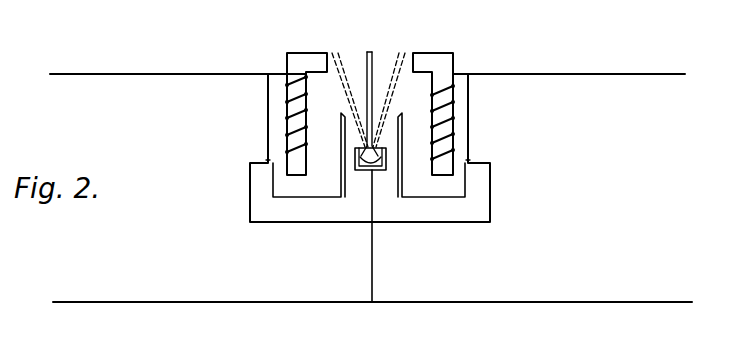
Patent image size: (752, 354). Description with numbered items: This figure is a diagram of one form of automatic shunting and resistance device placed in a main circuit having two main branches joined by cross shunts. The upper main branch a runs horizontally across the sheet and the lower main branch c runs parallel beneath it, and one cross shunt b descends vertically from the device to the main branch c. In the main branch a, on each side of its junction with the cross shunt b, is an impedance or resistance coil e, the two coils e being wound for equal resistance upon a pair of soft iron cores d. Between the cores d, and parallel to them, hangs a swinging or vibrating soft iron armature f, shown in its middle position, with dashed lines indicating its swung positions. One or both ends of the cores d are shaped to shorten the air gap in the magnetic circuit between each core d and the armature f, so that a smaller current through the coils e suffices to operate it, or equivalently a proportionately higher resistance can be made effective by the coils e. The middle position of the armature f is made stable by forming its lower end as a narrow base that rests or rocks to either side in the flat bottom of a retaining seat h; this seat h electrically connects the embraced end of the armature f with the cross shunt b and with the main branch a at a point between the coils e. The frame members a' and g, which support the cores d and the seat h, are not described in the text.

The main branch a is at (367, 90).
The shunt branch conductor / frame a' is at (365, 161).
The cross shunt b is at (374, 252).
The main branch c is at (372, 290).
The soft iron core d is at (446, 58).
The resistance coil e is at (424, 116).
The armature f is at (375, 60).
The frame supports g is at (369, 156).
The retaining seat h is at (352, 178).